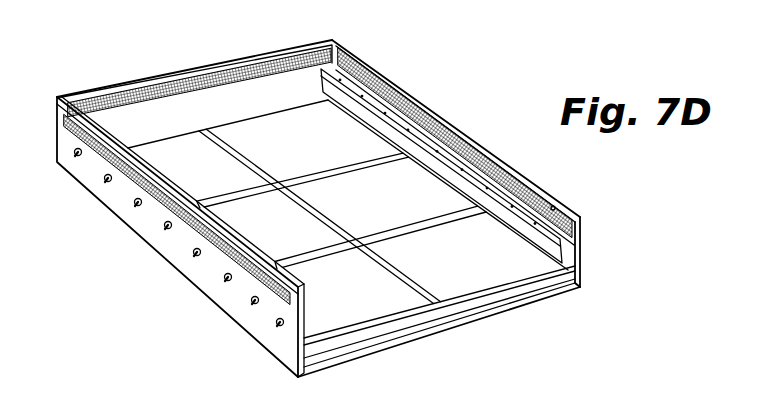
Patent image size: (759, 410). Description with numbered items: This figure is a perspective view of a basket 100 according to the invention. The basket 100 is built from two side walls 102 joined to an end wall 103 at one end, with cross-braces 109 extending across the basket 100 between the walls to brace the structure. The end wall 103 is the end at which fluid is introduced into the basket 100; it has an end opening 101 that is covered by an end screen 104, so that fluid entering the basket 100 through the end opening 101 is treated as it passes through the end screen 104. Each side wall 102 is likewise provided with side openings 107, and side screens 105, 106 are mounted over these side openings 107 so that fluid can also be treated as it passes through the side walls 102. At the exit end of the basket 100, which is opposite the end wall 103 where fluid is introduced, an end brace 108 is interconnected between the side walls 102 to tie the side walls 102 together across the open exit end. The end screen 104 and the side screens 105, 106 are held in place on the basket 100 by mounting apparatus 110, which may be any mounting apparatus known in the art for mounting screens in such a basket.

The basket 100 is at (182, 291).
The end opening 101 is at (284, 52).
The side walls 102 is at (573, 256).
The end wall 103 is at (161, 79).
The end screen 104 is at (222, 78).
The side screen 105 is at (180, 233).
The side screen 106 is at (470, 152).
The side openings 107 is at (392, 83).
The end brace 108 is at (492, 296).
The cross-braces 109 is at (241, 192).
The mounting apparatus 110 is at (548, 207).